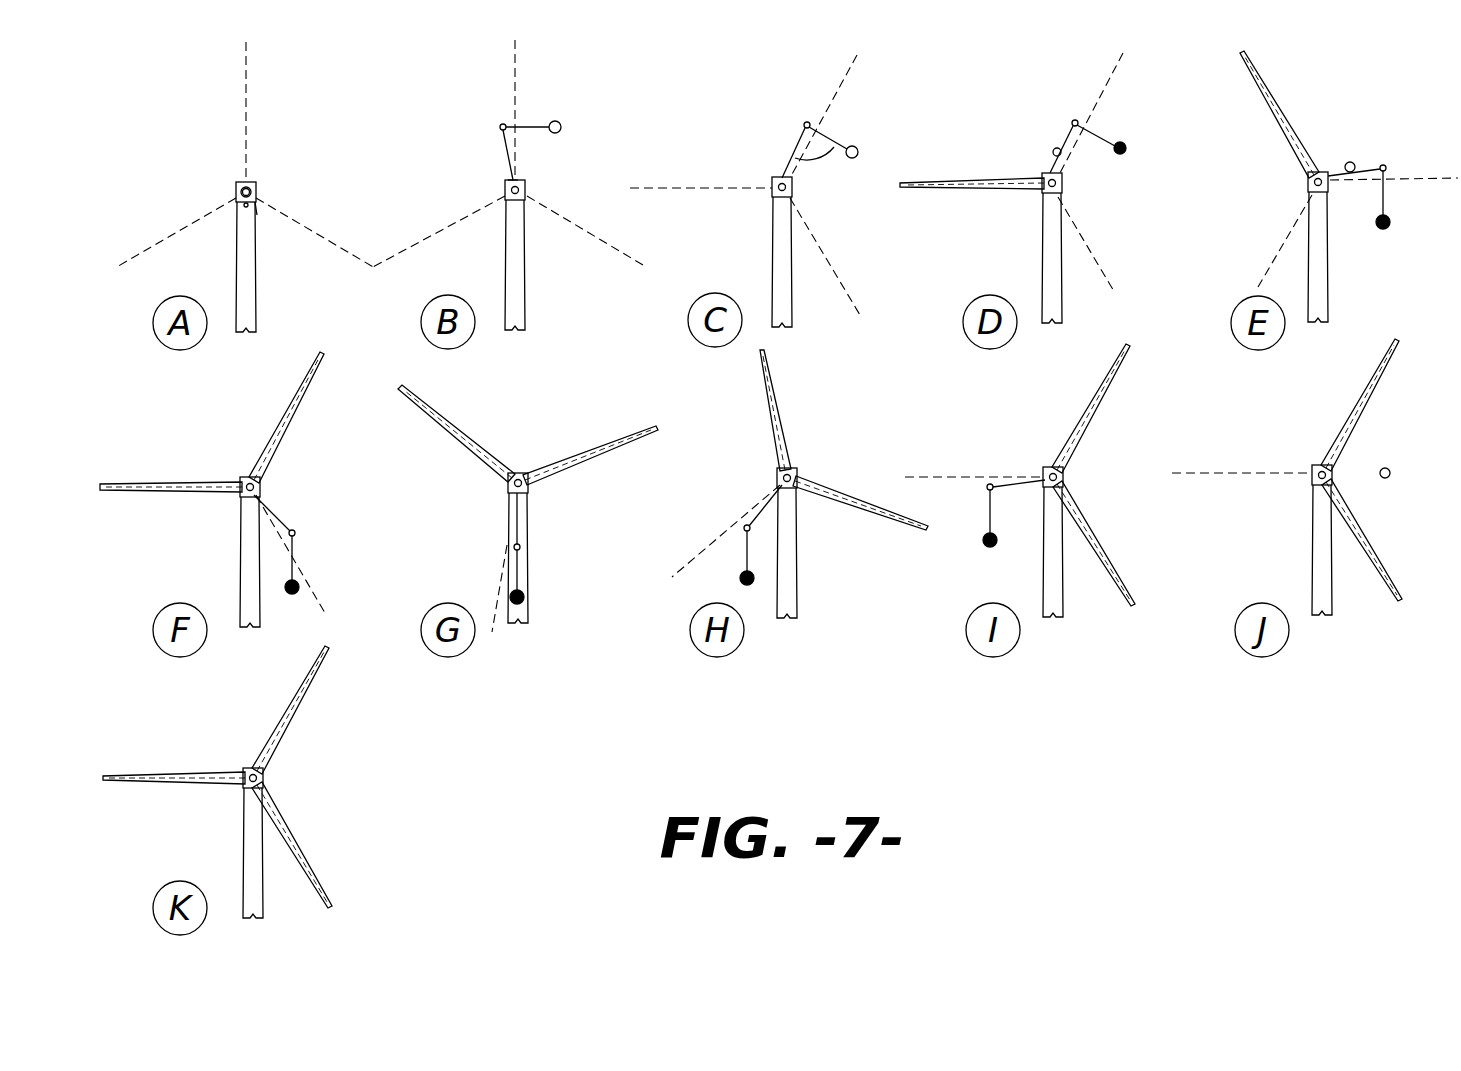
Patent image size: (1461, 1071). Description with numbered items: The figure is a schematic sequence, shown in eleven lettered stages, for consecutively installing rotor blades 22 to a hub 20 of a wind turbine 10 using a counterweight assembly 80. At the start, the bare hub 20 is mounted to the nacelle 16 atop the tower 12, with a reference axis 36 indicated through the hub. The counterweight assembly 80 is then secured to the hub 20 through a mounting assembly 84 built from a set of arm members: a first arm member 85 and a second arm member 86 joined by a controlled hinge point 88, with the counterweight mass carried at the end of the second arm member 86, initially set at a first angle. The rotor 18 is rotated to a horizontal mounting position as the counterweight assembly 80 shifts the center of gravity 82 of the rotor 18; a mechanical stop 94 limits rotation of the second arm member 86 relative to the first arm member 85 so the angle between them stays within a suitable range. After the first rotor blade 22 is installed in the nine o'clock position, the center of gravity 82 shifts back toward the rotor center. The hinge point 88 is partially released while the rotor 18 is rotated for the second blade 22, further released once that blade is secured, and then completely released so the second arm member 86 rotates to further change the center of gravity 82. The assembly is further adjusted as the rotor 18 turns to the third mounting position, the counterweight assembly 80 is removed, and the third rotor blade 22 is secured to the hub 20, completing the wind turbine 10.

The wind turbine 10 is at (355, 770).
The tower 12 is at (258, 300).
The nacelle 16 is at (258, 190).
The rotor 18 is at (236, 190).
The hub 20 is at (258, 212).
The rotor blade 22 is at (283, 430).
The rotor plane / reference axis 36 is at (282, 213).
The counterweight assembly 80 is at (532, 142).
The center of gravity 82 is at (240, 212).
The mounting assembly 84 is at (483, 135).
The first arm member 85 is at (505, 143).
The second arm member 86 is at (532, 124).
The controlled hinge point 88 is at (498, 125).
The mechanical stop 94 is at (822, 160).